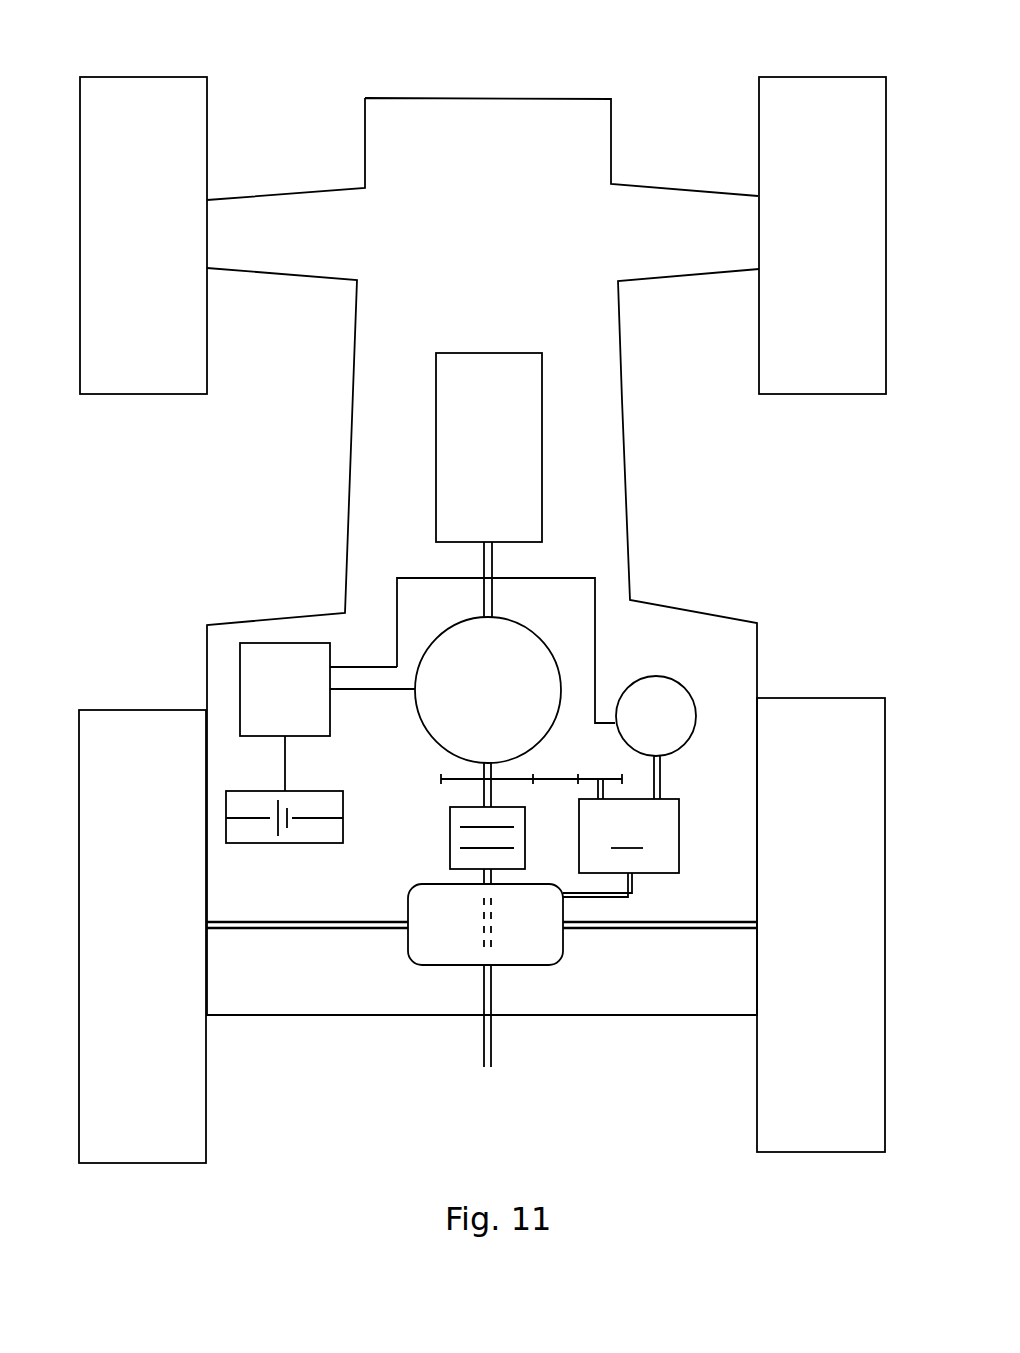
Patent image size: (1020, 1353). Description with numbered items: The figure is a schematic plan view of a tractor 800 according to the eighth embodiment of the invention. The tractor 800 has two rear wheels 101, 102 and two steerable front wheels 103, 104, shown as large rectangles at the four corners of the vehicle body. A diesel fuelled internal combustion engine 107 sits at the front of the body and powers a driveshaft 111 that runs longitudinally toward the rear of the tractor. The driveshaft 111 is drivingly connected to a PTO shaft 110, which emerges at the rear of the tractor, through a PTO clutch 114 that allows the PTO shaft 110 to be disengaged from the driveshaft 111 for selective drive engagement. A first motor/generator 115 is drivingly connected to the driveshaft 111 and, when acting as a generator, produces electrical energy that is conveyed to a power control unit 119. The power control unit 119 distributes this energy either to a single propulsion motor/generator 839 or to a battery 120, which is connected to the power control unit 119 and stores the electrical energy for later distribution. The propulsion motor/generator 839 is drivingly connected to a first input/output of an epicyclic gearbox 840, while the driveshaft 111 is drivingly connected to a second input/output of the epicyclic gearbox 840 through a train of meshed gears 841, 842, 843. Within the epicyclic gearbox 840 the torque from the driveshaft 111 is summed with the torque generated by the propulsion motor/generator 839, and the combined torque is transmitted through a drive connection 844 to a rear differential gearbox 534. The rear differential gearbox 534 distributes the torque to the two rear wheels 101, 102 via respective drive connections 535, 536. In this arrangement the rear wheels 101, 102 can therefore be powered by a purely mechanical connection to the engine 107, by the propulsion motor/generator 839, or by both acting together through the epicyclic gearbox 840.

The tractor 800 is at (338, 45).
The rear wheel 101 is at (95, 1163).
The rear wheel 102 is at (870, 1152).
The front wheel 103 is at (102, 395).
The front wheel 104 is at (862, 395).
The internal combustion engine 107 is at (506, 458).
The PTO shaft 110 is at (493, 1052).
The driveshaft 111 is at (494, 565).
The PTO clutch 114 is at (450, 838).
The first motor/generator 115 is at (545, 648).
The power control unit 119 is at (293, 700).
The battery 120 is at (315, 845).
The rear differential gearbox 534 is at (442, 966).
The drive connection 535 is at (285, 930).
The drive connection 536 is at (683, 930).
The propulsion motor/generator 839 is at (684, 684).
The epicyclic gearbox 840 is at (629, 837).
The meshed gear 841 is at (455, 777).
The meshed gear 842 is at (557, 783).
The meshed gear 843 is at (596, 778).
The drive connection 844 is at (636, 889).